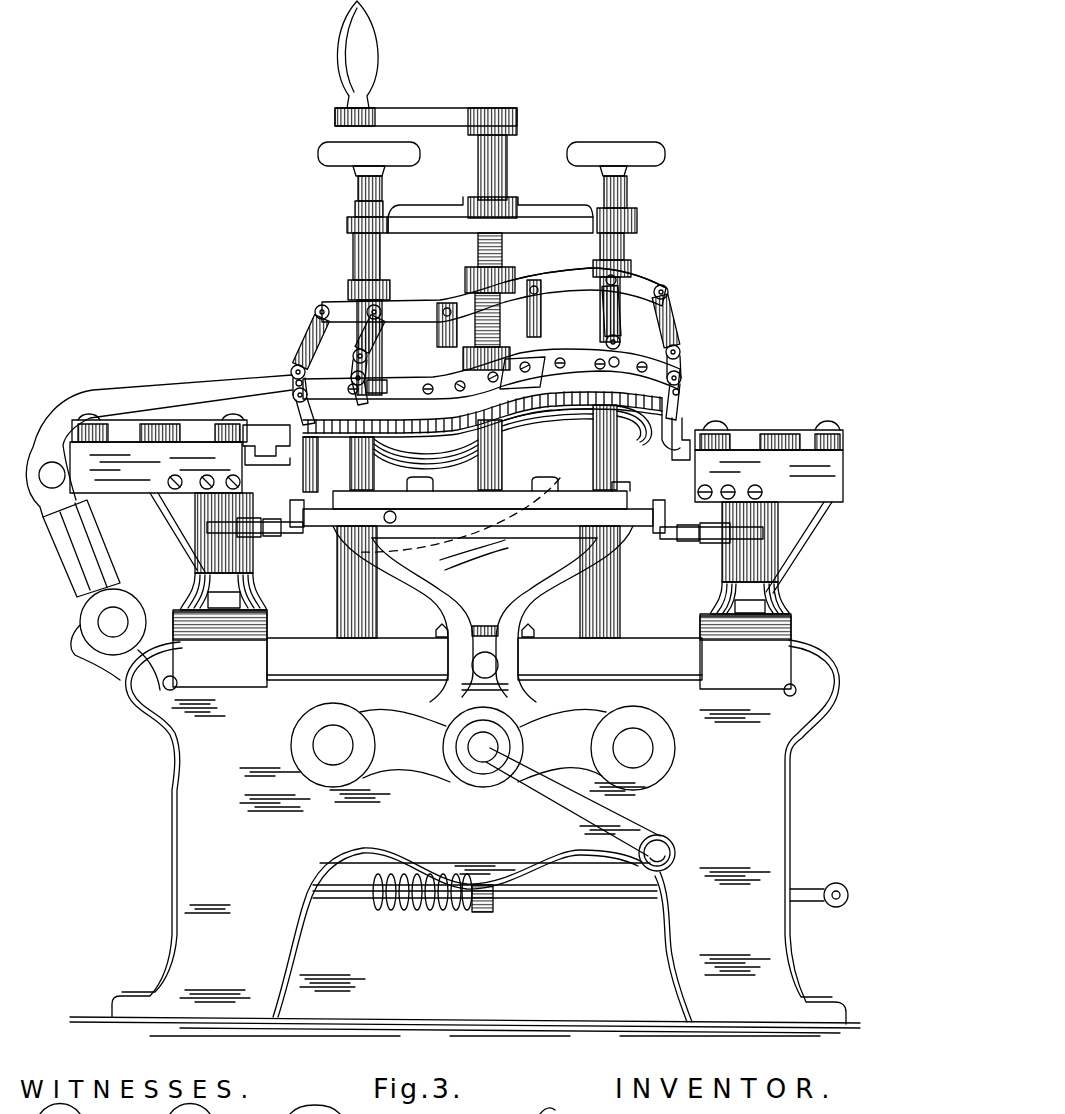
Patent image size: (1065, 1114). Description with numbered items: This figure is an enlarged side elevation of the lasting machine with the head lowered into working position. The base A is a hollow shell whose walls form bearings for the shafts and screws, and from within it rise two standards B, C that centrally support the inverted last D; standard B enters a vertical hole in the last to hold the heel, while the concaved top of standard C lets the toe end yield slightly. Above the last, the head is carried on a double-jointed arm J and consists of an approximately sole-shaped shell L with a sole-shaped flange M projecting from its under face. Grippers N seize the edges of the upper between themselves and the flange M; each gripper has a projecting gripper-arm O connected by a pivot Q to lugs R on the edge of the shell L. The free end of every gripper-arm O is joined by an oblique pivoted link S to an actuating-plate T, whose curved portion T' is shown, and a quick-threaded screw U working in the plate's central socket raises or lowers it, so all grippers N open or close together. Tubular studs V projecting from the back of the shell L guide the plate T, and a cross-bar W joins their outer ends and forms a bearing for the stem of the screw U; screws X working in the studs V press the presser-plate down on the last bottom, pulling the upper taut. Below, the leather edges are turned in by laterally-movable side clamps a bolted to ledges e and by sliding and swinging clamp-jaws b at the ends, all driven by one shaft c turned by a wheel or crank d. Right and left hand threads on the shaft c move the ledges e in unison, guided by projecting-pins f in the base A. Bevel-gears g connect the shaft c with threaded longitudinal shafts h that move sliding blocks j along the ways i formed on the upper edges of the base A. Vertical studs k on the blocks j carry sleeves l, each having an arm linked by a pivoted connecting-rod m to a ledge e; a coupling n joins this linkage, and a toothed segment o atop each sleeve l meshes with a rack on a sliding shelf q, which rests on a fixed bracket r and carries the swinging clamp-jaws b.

The base A is at (465, 838).
The standard B is at (338, 605).
The standard C is at (620, 596).
The last D is at (445, 552).
The double-jointed arm J is at (222, 382).
The shell L is at (412, 378).
The sole-shaped flange M is at (280, 425).
The grippers N is at (522, 373).
The gripper-arm O is at (296, 378).
The pivot Q is at (550, 325).
The lugs R is at (295, 366).
The oblique pivoted link S is at (313, 322).
The actuating-plate T is at (491, 293).
The curved bar portion T' is at (602, 269).
The quick-threaded screw U is at (504, 250).
The tubular studs V is at (383, 268).
The cross-bar W is at (445, 215).
The screws X is at (356, 192).
The side clamps a is at (632, 472).
The clamp-jaws b is at (260, 470).
The shaft c is at (492, 740).
The wheel or crank d is at (580, 809).
The ledges e is at (477, 629).
The projecting-pins f is at (483, 746).
The bevel-gears g is at (440, 630).
The longitudinal shafts h is at (383, 905).
The ways i is at (484, 659).
The sliding blocks j is at (482, 649).
The vertical studs k is at (262, 578).
The sleeve l is at (200, 556).
The pivoted connecting-rod m is at (275, 535).
The coupling n is at (268, 560).
The toothed segment o is at (683, 390).
The sliding shelf q is at (103, 452).
The bracket r is at (170, 520).